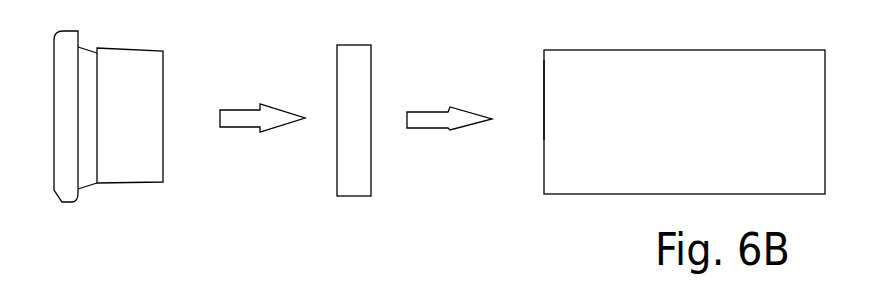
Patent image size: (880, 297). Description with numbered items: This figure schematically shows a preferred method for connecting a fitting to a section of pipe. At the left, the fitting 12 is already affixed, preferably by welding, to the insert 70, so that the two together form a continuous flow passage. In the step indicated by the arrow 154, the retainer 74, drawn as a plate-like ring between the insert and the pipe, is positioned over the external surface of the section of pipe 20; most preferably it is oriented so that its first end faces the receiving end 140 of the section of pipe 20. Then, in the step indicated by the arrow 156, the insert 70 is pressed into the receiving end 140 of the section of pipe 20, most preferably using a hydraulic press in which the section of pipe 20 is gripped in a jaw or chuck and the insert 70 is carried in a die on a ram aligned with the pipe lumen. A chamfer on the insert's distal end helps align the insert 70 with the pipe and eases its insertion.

The fitting 12 is at (67, 199).
The insert 70 is at (150, 180).
The insert pressing step 156 is at (227, 125).
The retainer 74 is at (363, 168).
The retainer positioning step 154 is at (415, 127).
The section of pipe 20 is at (565, 185).
The receiving end 140 is at (545, 107).